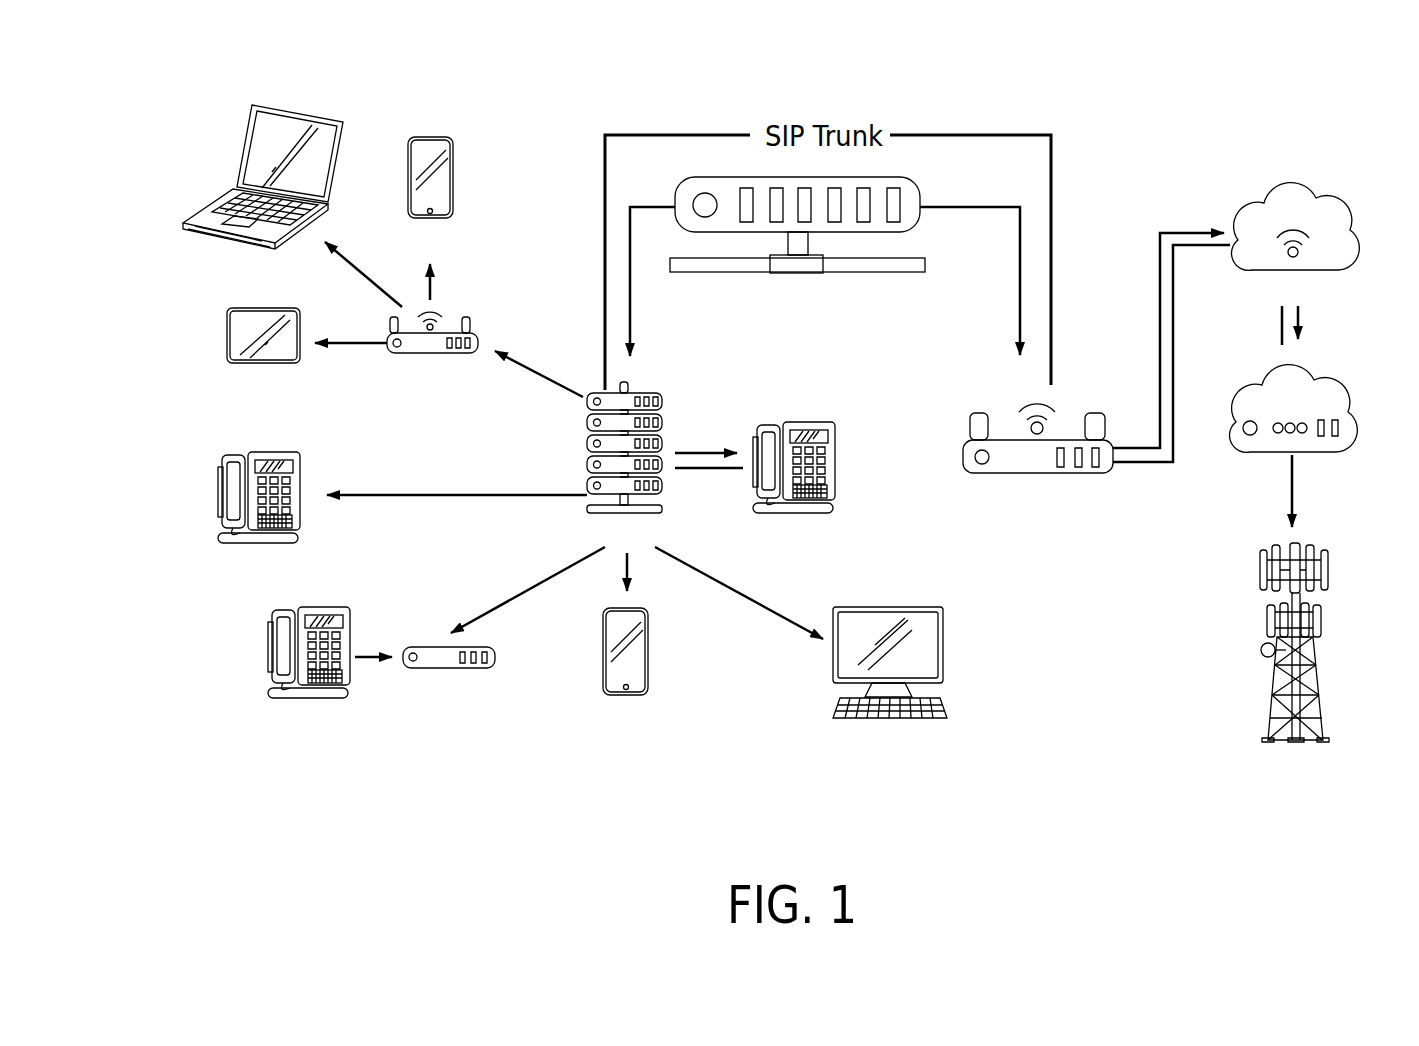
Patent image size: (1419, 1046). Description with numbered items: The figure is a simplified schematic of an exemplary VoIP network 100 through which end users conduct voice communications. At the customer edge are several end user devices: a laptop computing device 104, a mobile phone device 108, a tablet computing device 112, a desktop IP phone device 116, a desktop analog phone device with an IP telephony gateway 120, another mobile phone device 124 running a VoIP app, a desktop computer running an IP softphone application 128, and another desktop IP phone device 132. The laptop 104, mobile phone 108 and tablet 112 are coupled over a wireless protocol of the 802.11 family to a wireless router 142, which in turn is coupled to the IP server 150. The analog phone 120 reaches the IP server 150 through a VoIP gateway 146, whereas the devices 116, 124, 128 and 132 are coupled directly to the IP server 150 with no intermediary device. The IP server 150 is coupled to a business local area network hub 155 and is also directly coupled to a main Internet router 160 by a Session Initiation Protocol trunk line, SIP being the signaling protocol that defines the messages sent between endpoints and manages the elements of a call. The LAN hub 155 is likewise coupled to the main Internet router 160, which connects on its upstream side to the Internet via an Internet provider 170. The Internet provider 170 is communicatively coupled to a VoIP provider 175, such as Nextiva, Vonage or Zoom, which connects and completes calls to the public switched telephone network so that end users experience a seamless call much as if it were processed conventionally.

The VoIP network 100 is at (564, 57).
The laptop computing device 104 is at (200, 206).
The mobile phone device 108 is at (453, 165).
The tablet computing device 112 is at (227, 337).
The desktop IP phone device 116 is at (218, 495).
The desktop analog phone device with IP telephony gateway 120 is at (268, 650).
The mobile phone device 124 is at (650, 647).
The desktop computer running IP softphone application 128 is at (945, 640).
The desktop IP phone device 132 is at (837, 443).
The wireless router 142 is at (482, 335).
The VoIP gateway 146 is at (497, 658).
The IP server 150 is at (662, 405).
The business local area network (LAN) hub 155 is at (920, 193).
The main Internet router 160 is at (1093, 412).
The Internet provider 170 is at (1293, 178).
The VoIP provider 175 is at (1333, 382).